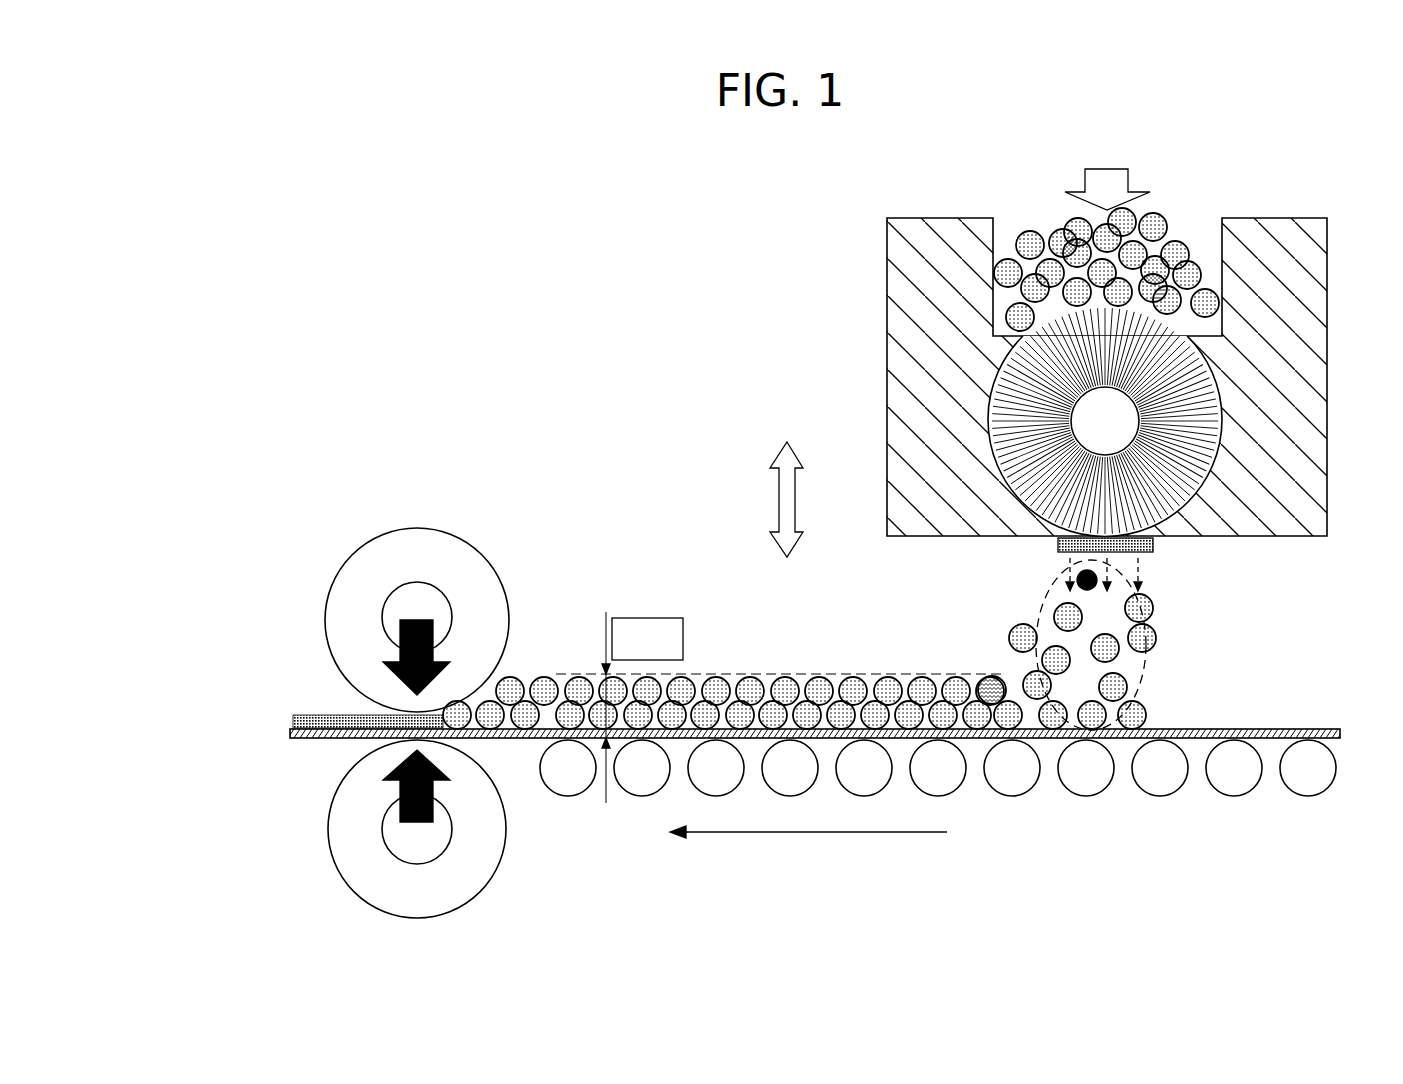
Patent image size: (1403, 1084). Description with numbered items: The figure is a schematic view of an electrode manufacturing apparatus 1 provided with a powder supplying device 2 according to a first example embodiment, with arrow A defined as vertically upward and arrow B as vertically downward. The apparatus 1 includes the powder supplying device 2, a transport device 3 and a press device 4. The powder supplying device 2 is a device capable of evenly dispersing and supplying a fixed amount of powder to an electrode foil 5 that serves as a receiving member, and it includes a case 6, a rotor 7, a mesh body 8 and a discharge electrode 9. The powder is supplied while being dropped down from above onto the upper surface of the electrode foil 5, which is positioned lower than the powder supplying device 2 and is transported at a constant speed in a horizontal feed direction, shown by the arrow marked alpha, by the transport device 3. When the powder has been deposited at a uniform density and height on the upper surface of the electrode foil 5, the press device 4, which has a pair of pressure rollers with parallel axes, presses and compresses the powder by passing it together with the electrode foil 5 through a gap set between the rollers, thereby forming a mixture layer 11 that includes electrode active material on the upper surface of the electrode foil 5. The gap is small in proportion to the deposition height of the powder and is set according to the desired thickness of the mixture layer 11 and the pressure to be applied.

The electrode manufacturing apparatus 1 is at (402, 242).
The powder supplying device 2 is at (826, 295).
The transport device 3 is at (1135, 812).
The press device 4 is at (373, 674).
The electrode foil 5 is at (1262, 728).
The case 6 is at (884, 380).
The rotor 7 is at (1234, 432).
The mesh body 8 is at (1153, 543).
The discharge electrode 9 is at (1085, 598).
The mixture layer 11 is at (318, 713).